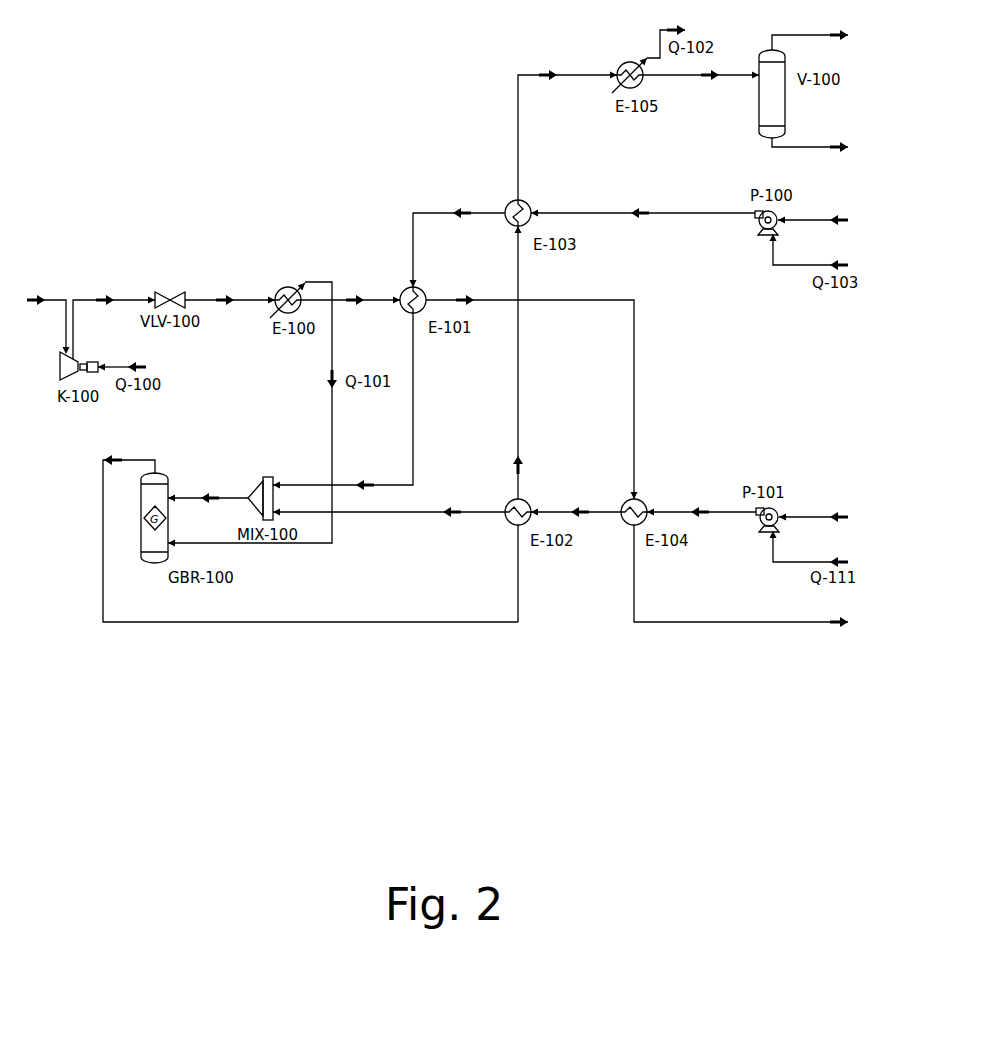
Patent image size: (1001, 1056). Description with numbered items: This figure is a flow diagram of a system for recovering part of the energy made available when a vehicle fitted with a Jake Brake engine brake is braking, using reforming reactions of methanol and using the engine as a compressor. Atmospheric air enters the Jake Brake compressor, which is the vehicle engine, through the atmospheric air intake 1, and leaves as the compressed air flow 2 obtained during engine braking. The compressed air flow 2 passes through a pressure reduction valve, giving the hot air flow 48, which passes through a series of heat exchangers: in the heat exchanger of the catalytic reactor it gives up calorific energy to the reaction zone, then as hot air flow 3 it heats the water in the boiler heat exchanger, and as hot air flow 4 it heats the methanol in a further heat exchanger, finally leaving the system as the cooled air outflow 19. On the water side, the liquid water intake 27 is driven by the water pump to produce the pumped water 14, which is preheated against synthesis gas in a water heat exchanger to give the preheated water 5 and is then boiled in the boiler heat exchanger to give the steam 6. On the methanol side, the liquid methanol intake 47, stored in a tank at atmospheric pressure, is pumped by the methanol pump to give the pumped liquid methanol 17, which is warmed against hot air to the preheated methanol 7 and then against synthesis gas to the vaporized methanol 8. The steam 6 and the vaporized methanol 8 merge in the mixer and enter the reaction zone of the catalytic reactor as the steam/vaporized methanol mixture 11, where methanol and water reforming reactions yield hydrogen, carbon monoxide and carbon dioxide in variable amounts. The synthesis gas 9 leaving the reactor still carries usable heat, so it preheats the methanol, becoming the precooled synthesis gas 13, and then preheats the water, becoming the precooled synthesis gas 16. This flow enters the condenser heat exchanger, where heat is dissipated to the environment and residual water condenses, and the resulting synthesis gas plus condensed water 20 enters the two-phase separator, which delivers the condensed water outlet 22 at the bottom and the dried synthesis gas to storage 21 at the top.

The atmospheric air intake 1 is at (48, 312).
The compressed air flow 2 is at (114, 327).
The hot air flow 48 is at (230, 310).
The hot air flow 3 is at (350, 312).
The hot air flow 4 is at (532, 388).
The preheated water 5 is at (458, 247).
The steam 6 is at (343, 412).
The preheated methanol 7 is at (576, 521).
The vaporized methanol 8 is at (389, 521).
The synthesis gas from the catalytic reactor 9 is at (310, 538).
The steam/vaporized methanol mixture 11 is at (208, 509).
The precooled synthesis gas 13 is at (530, 362).
The pumped water 14 is at (643, 224).
The precooled synthesis gas 16 is at (567, 135).
The pumped liquid methanol 17 is at (701, 521).
The cooled air outflow 19 is at (743, 585).
The synthesis gas plus condensed water 20 is at (701, 86).
The dried synthesis gas to storage 21 is at (802, 35).
The condensed water outlet 22 is at (813, 144).
The liquid water intake 27 is at (817, 219).
The liquid methanol intake 47 is at (815, 516).